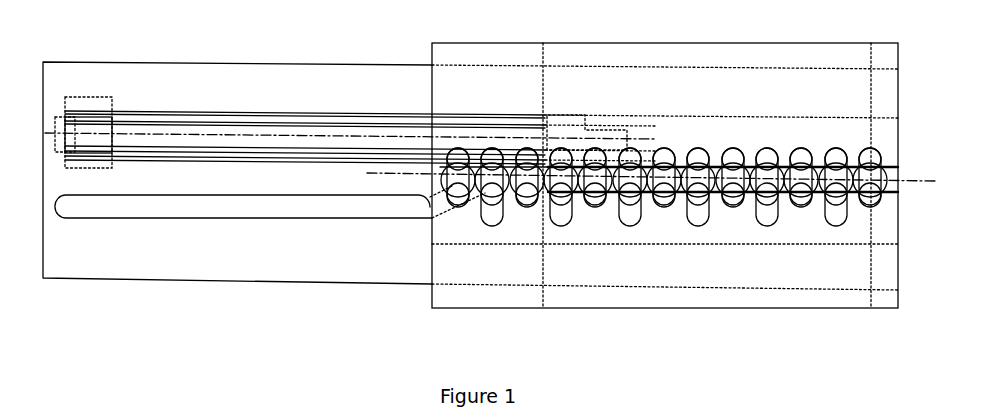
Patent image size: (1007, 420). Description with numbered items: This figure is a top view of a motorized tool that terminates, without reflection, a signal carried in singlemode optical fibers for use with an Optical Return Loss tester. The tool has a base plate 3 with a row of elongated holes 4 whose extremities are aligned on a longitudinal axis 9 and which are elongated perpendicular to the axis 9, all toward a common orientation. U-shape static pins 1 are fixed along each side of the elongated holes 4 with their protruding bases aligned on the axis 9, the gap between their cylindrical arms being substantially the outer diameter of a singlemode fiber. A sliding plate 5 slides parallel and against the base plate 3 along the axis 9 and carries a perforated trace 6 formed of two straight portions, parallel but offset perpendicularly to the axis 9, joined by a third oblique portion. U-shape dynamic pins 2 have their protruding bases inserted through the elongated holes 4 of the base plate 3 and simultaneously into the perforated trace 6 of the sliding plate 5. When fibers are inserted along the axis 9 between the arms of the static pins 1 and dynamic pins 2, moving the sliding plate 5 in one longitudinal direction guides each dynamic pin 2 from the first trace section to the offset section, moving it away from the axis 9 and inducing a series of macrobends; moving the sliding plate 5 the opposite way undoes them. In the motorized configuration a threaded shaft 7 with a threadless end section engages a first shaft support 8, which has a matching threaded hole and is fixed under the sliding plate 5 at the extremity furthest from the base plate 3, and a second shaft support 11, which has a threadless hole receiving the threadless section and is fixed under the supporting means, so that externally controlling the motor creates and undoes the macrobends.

The static pins 1 is at (870, 155).
The dynamic pins 2 is at (833, 155).
The base plate 3 is at (650, 257).
The elongated holes 4 is at (833, 230).
The sliding plate 5 is at (350, 83).
The perforated trace 6 is at (312, 210).
The threaded shaft 7 is at (212, 127).
The first shaft support 8 is at (85, 120).
The longitudinal axis 9 is at (365, 170).
The second shaft support 11 is at (558, 125).